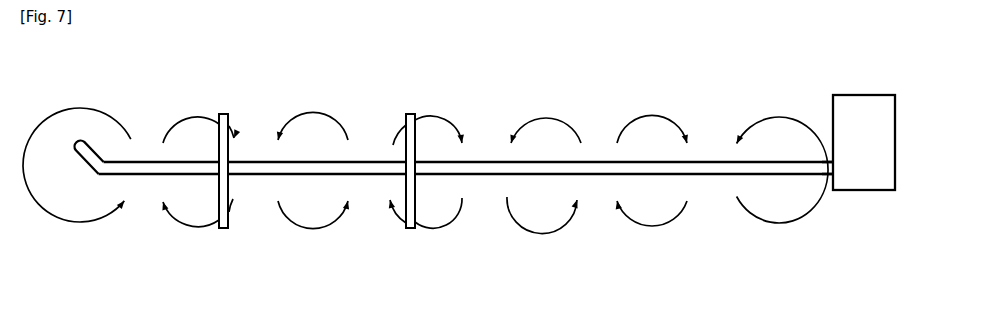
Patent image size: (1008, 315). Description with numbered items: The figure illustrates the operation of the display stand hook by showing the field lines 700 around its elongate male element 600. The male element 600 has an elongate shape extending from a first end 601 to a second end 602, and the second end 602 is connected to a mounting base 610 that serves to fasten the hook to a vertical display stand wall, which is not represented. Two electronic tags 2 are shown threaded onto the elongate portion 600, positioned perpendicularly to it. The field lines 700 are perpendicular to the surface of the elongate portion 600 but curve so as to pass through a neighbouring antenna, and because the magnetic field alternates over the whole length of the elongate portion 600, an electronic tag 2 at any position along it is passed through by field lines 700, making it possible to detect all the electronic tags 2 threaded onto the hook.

The electronic tag 2 is at (406, 114).
The male element 600 is at (606, 161).
The first end 601 is at (78, 169).
The second end 602 is at (832, 186).
The mounting base 610 is at (863, 191).
The field lines 700 is at (165, 210).